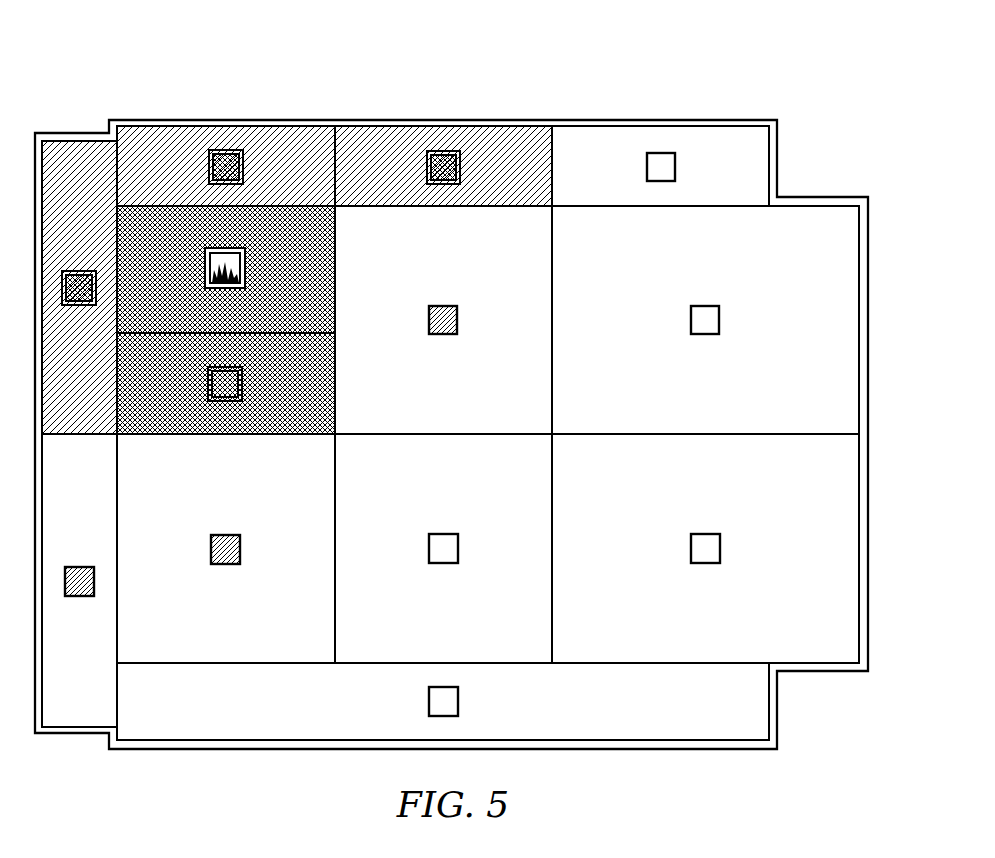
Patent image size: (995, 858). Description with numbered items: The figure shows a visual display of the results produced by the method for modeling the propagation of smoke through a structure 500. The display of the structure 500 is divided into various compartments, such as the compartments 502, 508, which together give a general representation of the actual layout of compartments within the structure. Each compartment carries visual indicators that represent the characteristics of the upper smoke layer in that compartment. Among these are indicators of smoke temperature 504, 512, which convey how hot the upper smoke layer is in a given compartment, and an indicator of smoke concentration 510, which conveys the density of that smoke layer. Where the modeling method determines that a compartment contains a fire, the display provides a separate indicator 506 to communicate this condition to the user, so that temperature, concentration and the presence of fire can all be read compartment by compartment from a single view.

The structure 500 is at (451, 387).
The compartment 502 is at (163, 205).
The indicator of smoke temperature 504 is at (183, 217).
The separate indicator 506 is at (233, 248).
The compartment 508 is at (393, 125).
The indicator of smoke concentration 510 is at (444, 150).
The indicator of smoke temperature 512 is at (502, 147).